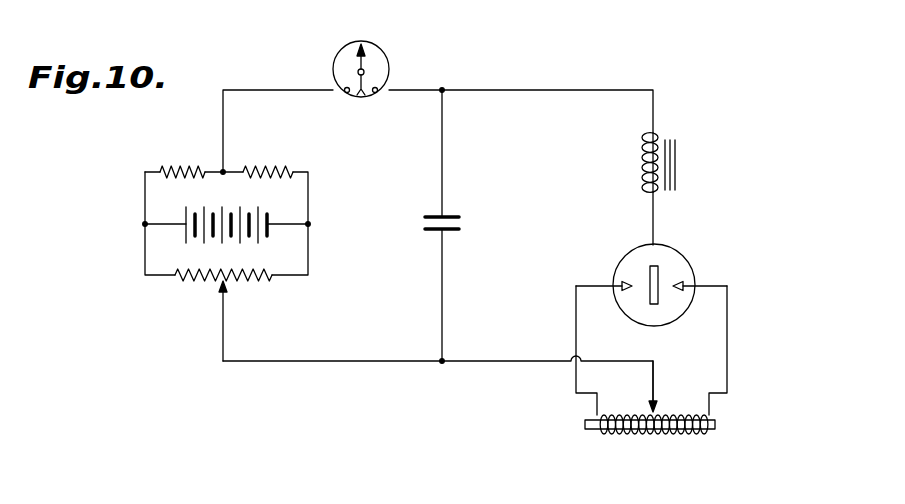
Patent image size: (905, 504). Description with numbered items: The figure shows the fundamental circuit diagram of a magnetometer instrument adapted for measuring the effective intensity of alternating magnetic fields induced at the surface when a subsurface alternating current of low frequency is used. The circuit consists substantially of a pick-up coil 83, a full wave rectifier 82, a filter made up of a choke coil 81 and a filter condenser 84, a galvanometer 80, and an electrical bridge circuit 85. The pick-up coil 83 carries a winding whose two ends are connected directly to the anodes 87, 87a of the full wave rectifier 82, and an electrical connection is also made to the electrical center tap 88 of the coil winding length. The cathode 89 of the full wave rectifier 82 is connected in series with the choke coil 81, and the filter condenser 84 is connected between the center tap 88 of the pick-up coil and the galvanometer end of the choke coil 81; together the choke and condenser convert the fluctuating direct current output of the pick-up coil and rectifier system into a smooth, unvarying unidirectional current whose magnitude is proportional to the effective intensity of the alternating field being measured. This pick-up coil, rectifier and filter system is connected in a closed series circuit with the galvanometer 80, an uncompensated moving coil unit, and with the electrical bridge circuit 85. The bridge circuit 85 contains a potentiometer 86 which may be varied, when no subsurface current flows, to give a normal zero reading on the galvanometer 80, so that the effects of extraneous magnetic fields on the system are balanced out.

The galvanometer 80 is at (413, 35).
The choke coil 81 is at (677, 162).
The full wave rectifier 82 is at (615, 271).
The pick-up coil 83 is at (697, 436).
The filter condenser 84 is at (452, 216).
The electrical bridge circuit 85 is at (145, 194).
The potentiometer 86 is at (194, 283).
The anode 87 is at (590, 287).
The anode 87a is at (716, 285).
The electrical center tap 88 is at (658, 412).
The cathode 89 is at (649, 267).